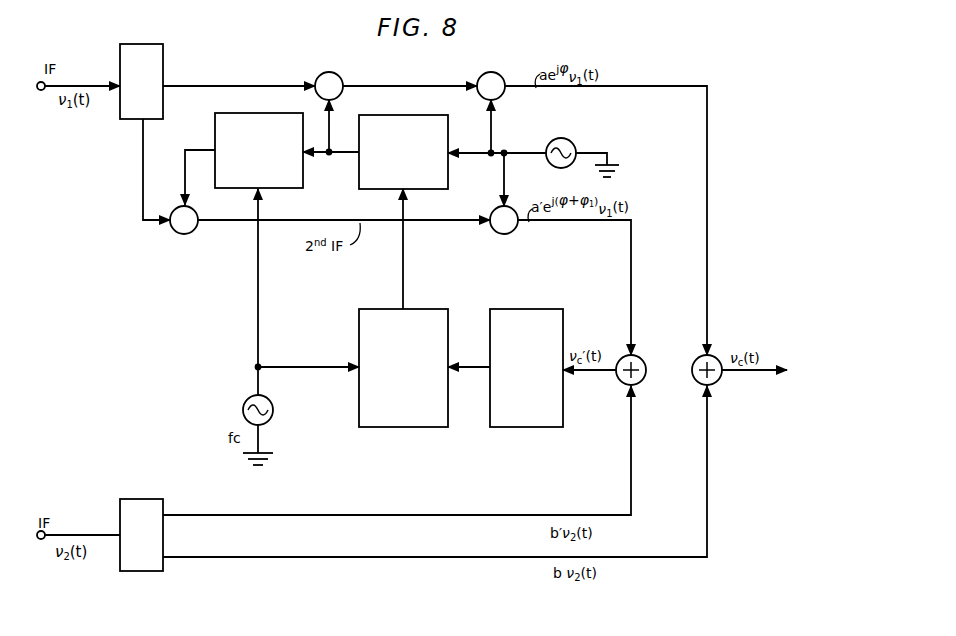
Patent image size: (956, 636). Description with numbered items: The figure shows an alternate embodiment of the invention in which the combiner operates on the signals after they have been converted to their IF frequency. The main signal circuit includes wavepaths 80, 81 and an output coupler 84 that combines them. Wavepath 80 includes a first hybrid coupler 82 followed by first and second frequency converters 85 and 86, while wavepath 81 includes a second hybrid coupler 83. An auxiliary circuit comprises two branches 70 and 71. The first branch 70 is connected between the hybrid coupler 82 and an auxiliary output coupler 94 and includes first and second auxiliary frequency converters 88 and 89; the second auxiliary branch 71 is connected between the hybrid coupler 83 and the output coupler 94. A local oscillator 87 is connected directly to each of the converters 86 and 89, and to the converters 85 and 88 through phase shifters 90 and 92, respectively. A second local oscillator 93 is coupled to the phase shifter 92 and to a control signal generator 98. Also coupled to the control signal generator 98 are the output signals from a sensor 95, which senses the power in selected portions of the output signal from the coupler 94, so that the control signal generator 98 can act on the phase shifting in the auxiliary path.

The first auxiliary branch 70 is at (133, 169).
The second auxiliary branch 71 is at (397, 450).
The wavepath 80 is at (239, 68).
The wavepath 81 is at (435, 489).
The first hybrid coupler 82 is at (150, 44).
The second hybrid coupler 83 is at (145, 499).
The output coupler 84 is at (692, 373).
The first frequency converter 85 is at (336, 74).
The second frequency converter 86 is at (498, 74).
The local oscillator 87 is at (560, 138).
The first auxiliary frequency converter 88 is at (175, 207).
The second auxiliary frequency converter 89 is at (496, 210).
The phase shifter 90 is at (430, 115).
The phase shifter 92 is at (229, 113).
The second local oscillator 93 is at (268, 385).
The auxiliary output coupler 94 is at (636, 358).
The sensor 95 is at (545, 309).
The control signal generator 98 is at (415, 309).